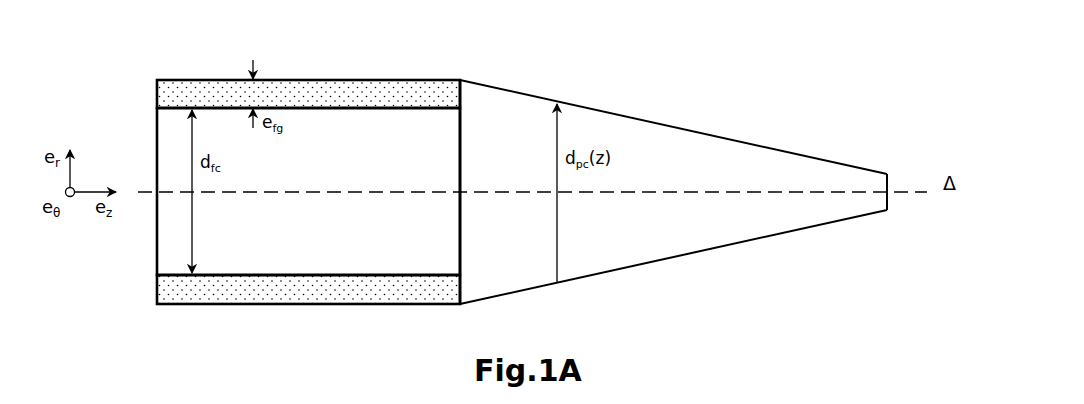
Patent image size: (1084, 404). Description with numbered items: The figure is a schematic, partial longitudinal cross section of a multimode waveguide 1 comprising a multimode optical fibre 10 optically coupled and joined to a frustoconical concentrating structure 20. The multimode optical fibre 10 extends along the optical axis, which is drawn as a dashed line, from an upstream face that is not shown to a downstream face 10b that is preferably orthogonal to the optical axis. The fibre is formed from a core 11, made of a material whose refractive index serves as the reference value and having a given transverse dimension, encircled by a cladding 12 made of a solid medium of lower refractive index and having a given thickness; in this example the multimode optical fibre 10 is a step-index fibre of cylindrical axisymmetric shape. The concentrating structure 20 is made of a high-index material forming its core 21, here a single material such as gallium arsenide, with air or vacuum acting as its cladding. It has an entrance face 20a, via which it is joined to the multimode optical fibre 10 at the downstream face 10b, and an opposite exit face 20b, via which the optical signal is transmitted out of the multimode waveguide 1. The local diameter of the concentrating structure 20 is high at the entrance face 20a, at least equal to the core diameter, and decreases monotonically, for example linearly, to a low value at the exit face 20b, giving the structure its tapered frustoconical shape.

The multimode waveguide 1 is at (127, 72).
The multimode optical fibre 10 is at (318, 63).
The downstream face 10b is at (456, 118).
The core 11 is at (157, 250).
The cladding 12 is at (157, 95).
The frustoconical concentrating structure 20 is at (693, 95).
The entrance face 20a is at (463, 106).
The exit face 20b is at (884, 181).
The core of the concentrating structure 21 is at (735, 139).